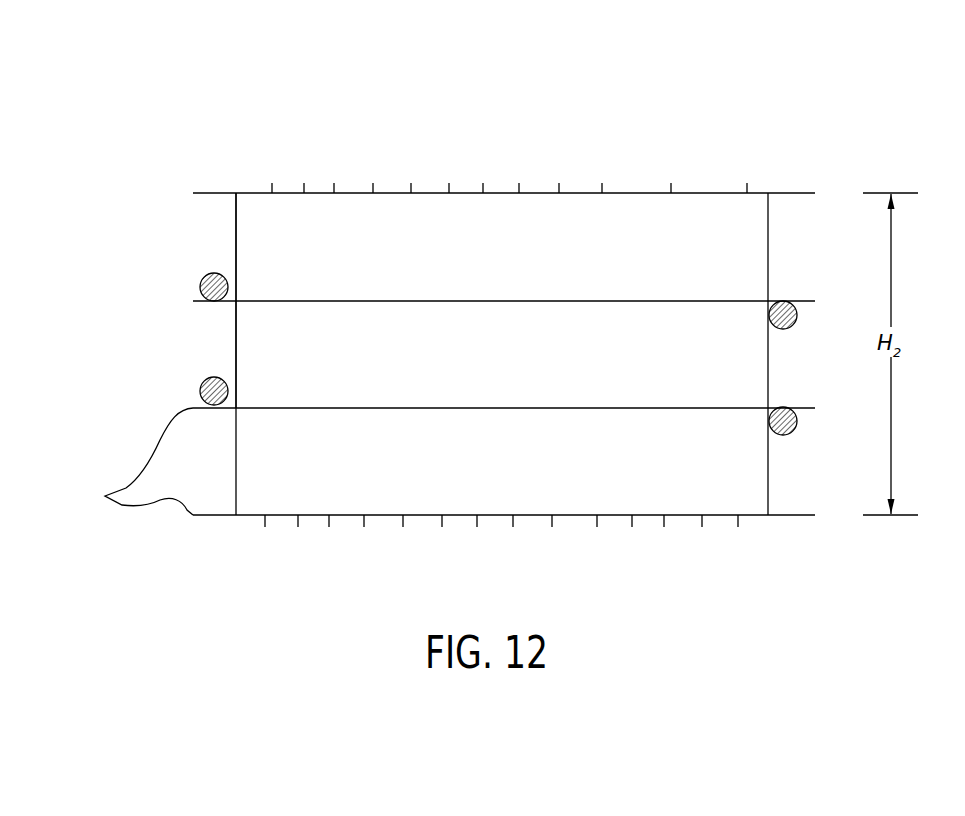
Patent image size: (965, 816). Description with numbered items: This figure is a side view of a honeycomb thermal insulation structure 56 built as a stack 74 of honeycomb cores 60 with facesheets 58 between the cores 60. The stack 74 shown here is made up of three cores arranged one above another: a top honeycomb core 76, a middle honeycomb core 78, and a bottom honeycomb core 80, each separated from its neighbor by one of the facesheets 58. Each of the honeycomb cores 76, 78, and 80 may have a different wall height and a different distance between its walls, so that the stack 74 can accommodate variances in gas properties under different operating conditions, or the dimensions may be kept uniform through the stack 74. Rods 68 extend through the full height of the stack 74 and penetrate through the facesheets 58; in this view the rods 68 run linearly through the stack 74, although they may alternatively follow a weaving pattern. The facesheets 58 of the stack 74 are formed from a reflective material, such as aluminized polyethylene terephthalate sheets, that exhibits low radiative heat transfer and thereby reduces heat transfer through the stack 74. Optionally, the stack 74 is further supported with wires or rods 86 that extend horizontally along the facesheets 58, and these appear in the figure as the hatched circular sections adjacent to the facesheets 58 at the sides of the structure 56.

The honeycomb thermal insulation structure 56 is at (478, 97).
The facesheets 58 is at (445, 461).
The honeycomb core 60 is at (236, 249).
The rods 68 is at (637, 193).
The stack 74 is at (110, 275).
The top honeycomb core 76 is at (768, 247).
The middle honeycomb core 78 is at (768, 365).
The bottom honeycomb core 80 is at (768, 471).
The wires or rods 86 is at (797, 314).